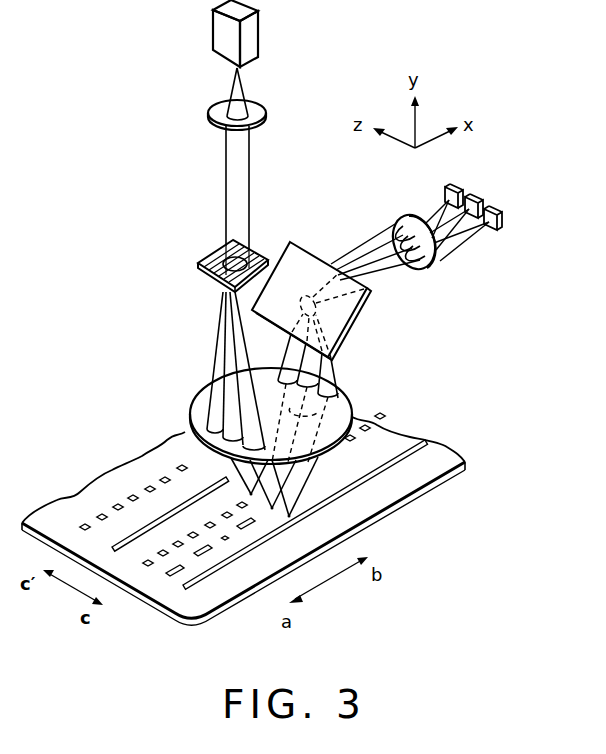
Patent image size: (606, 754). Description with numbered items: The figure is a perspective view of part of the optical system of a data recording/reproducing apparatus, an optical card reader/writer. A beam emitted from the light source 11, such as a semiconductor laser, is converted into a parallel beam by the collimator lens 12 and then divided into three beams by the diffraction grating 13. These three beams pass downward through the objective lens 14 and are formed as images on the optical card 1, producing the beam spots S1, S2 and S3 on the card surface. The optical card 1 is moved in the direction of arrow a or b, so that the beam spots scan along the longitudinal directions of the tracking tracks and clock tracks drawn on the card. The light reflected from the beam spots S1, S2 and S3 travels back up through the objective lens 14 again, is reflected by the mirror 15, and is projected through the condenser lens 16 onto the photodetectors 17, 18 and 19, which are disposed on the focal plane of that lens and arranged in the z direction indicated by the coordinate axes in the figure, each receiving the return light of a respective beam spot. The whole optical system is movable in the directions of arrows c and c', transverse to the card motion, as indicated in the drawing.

The optical card 1 is at (400, 493).
The light source 11 is at (260, 33).
The collimator lens 12 is at (264, 110).
The diffraction grating 13 is at (206, 260).
The objective lens 14 is at (193, 410).
The mirror 15 is at (358, 314).
The condenser lens 16 is at (437, 263).
The photodetector 17 is at (503, 213).
The photodetector 18 is at (478, 197).
The photodetector 19 is at (457, 186).
The beam spot S1 is at (252, 496).
The beam spot S2 is at (273, 510).
The beam spot S3 is at (290, 518).